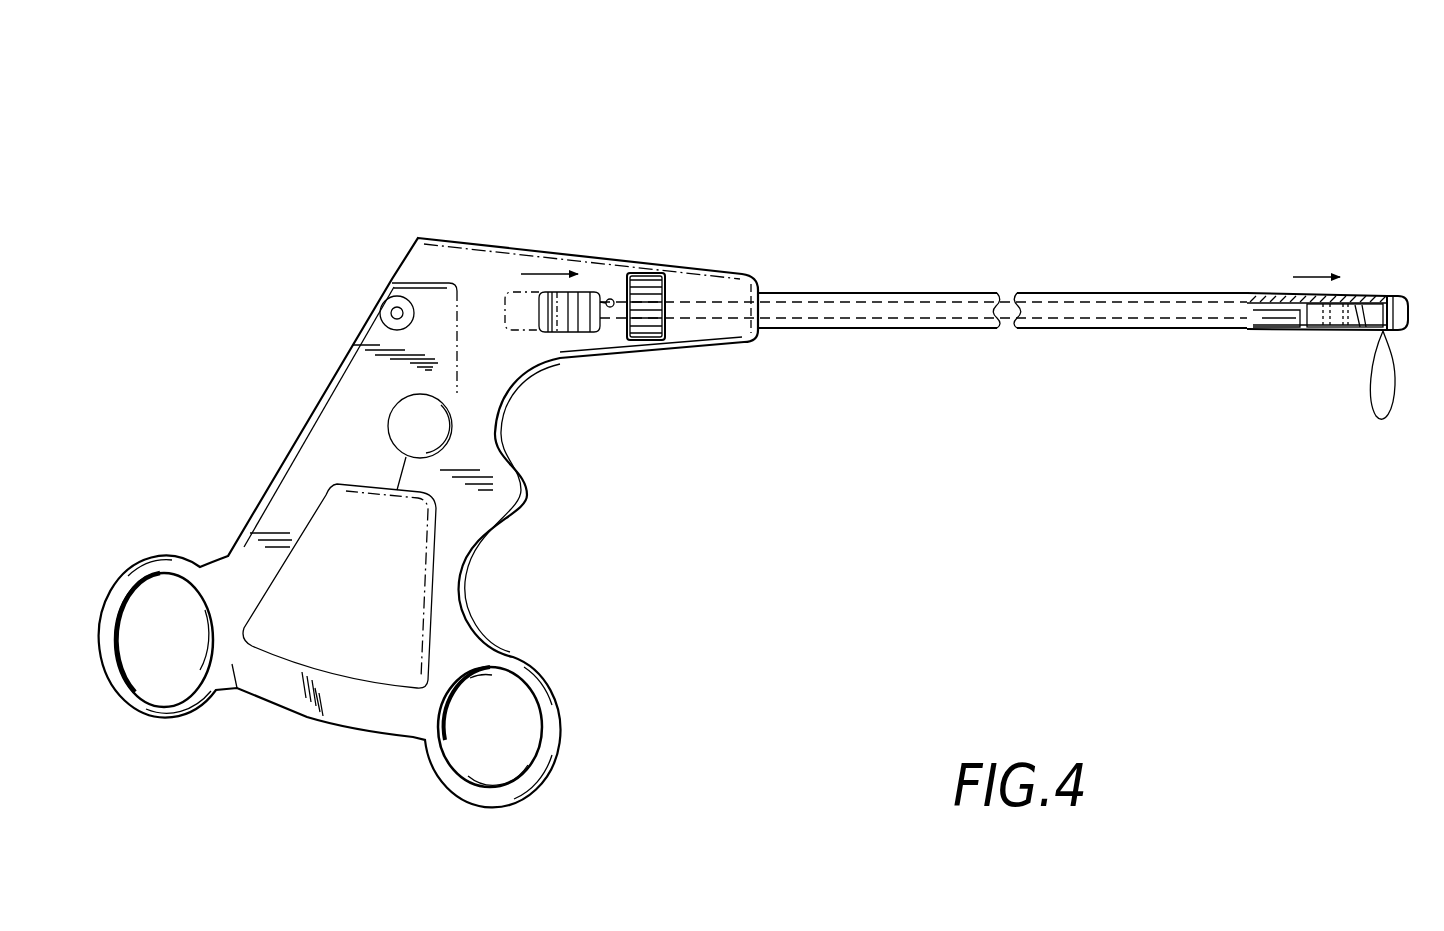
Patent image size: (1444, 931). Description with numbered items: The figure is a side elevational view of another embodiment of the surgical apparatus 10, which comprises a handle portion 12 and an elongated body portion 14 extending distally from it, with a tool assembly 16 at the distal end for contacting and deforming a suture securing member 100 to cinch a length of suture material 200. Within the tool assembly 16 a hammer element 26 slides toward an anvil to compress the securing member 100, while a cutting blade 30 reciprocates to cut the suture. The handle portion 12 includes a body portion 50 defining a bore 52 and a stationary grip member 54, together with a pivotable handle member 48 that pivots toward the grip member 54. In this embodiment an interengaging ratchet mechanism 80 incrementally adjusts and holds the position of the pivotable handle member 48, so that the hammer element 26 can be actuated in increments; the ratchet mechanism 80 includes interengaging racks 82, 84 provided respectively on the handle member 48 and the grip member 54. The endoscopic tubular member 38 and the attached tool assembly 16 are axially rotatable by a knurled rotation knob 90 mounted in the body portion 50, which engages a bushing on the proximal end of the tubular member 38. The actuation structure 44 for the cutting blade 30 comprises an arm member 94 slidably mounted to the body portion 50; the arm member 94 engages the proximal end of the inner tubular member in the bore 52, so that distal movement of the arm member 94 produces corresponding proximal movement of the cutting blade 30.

The surgical apparatus 10 is at (826, 203).
The handle portion 12 is at (478, 234).
The elongated body portion 14 is at (942, 280).
The tool assembly 16 is at (1280, 280).
The hammer element 26 is at (1347, 315).
The cutting blade 30 is at (1355, 293).
The endoscopic tubular member 38 is at (880, 333).
The actuation structure 44 is at (550, 338).
The pivotable handle member 48 is at (277, 458).
The body portion 50 is at (550, 268).
The bore 52 is at (614, 299).
The stationary grip member 54 is at (457, 627).
The ratchet mechanism 80 is at (318, 752).
The rack 82 is at (233, 666).
The rack 84 is at (366, 710).
The rotation knob 90 is at (653, 338).
The arm member 94 is at (593, 323).
The suture securing member 100 is at (1397, 297).
The suture material 200 is at (1382, 292).